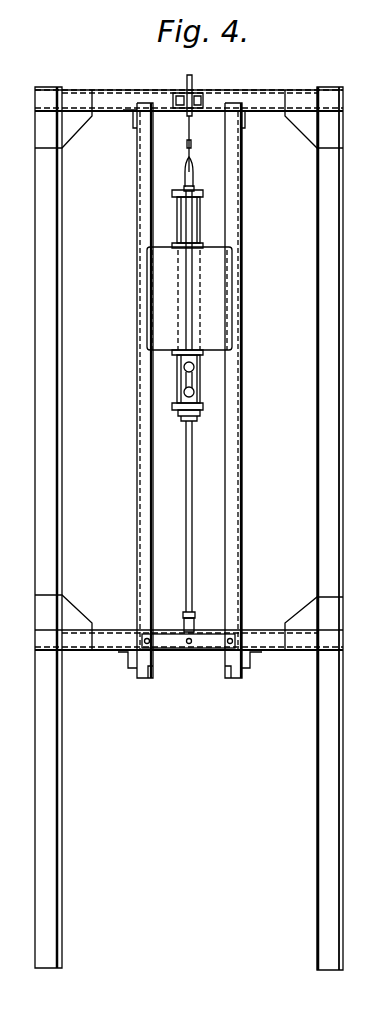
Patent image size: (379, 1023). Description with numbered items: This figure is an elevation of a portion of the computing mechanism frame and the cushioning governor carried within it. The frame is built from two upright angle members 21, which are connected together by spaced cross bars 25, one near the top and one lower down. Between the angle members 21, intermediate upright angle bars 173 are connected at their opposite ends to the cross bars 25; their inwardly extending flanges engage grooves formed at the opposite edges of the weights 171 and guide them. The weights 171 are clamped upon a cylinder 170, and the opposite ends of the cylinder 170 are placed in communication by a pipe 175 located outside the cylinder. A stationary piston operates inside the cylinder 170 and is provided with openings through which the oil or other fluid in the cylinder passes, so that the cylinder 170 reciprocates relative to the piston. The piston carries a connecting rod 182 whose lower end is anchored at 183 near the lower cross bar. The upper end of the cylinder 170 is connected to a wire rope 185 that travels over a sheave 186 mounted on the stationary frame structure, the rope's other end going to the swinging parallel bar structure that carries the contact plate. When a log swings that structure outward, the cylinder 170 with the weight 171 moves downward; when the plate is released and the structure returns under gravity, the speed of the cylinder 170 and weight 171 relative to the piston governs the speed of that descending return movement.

The angle members 21 is at (61, 798).
The cross bars 25 is at (104, 113).
The cylinder 170 is at (177, 210).
The weights 171 is at (233, 270).
The intermediate upright angle bars 173 is at (137, 388).
The pipe 175 is at (203, 221).
The connecting rod 182 is at (191, 470).
The anchor 183 is at (186, 645).
The rope 185 is at (191, 132).
The sheave 186 is at (193, 86).